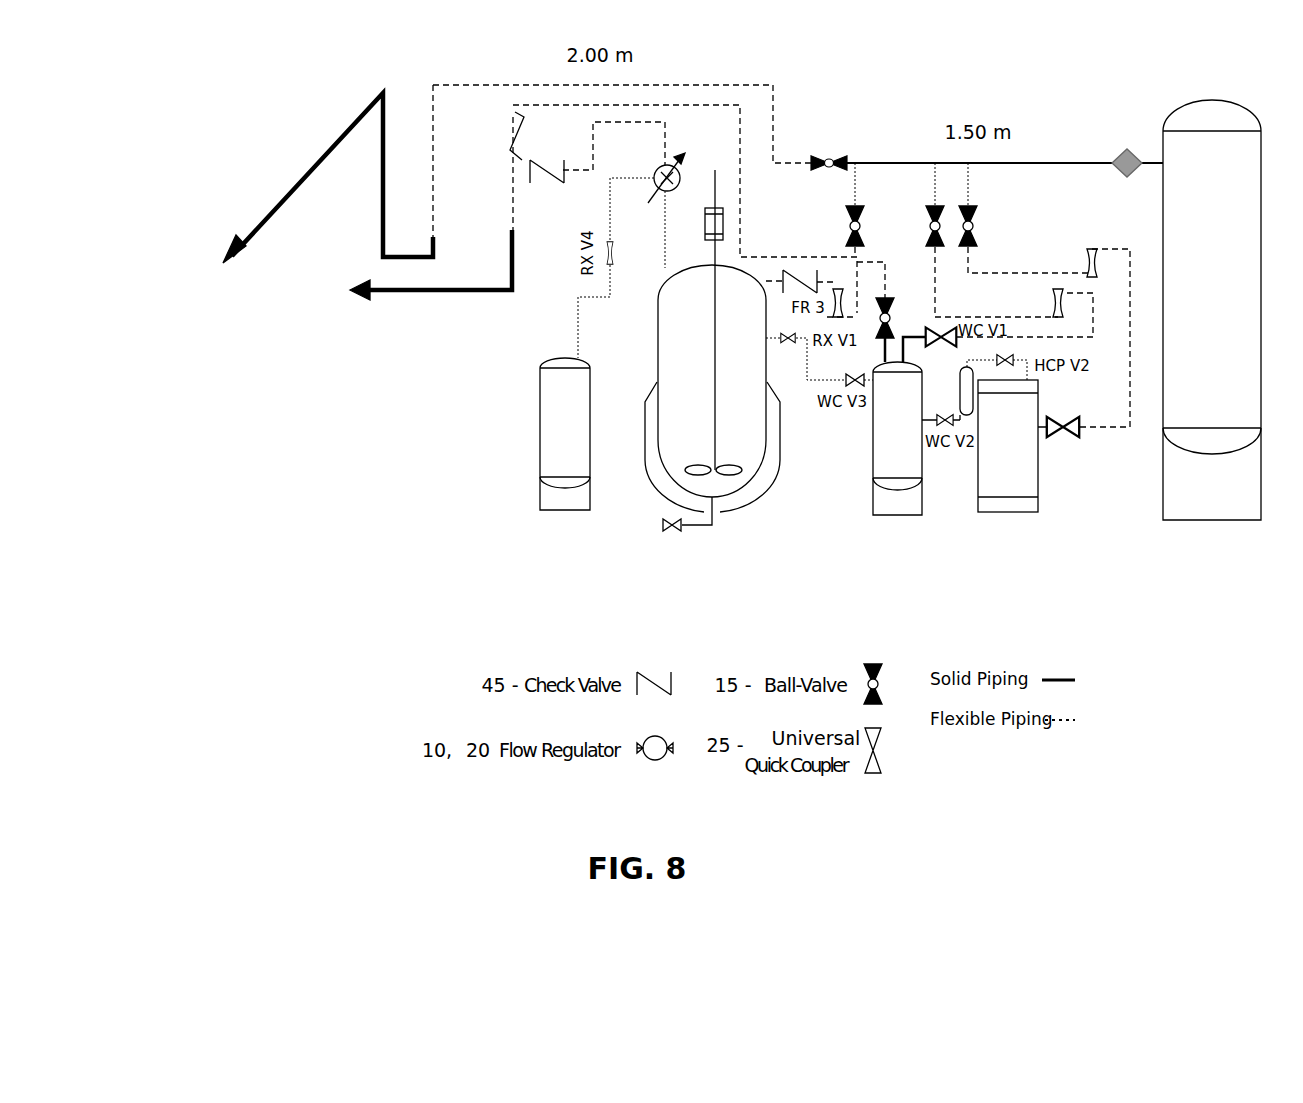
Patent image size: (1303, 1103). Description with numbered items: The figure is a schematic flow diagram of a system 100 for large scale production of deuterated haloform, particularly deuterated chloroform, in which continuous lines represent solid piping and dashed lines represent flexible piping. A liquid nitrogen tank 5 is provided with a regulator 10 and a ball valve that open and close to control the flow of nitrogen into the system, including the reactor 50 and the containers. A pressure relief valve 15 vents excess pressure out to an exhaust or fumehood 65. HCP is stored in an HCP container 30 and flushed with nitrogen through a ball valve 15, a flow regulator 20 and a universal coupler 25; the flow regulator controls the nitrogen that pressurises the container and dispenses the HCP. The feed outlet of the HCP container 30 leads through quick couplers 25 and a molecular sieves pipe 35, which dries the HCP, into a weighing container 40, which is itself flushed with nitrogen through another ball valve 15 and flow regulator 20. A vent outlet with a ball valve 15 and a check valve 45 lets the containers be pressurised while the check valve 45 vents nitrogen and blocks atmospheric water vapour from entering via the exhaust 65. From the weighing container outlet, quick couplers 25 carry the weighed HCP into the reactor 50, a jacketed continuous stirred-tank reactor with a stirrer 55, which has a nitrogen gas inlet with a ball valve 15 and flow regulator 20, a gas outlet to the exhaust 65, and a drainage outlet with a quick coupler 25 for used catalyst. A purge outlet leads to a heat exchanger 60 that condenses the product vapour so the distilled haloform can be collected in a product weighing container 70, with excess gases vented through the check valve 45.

The liquid nitrogen tank 5 is at (1226, 483).
The regulator 10 is at (1118, 155).
The ball valve 15 is at (843, 157).
The flow regulator 20 is at (1097, 270).
The universal coupler 25 is at (1070, 425).
The HCP container 30 is at (1045, 490).
The molecular sieves pipe 35 is at (962, 395).
The weighing container 40 is at (877, 505).
The check valve 45 is at (530, 172).
The reactor 50 is at (758, 442).
The stirrer 55 is at (713, 310).
The heat exchanger 60 is at (661, 205).
The exhaust or fumehood 65 is at (397, 293).
The product weighing container 70 is at (550, 503).
The system 100 is at (366, 554).